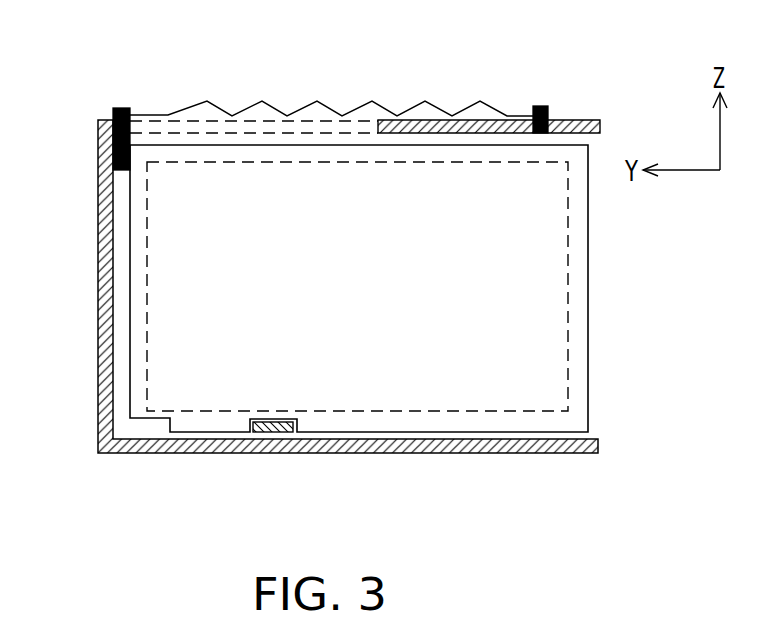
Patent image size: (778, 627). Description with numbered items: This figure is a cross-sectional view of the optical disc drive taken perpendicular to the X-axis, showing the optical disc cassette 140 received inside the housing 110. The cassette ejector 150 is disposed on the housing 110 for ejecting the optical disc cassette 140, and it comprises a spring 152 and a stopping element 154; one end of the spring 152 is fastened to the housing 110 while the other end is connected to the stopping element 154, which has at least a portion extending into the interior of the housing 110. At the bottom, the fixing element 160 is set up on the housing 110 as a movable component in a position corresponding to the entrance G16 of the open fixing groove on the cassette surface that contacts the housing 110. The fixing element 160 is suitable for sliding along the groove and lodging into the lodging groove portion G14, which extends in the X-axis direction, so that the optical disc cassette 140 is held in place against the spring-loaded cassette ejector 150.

The housing 110 is at (112, 283).
The optical disc cassette 140 is at (577, 298).
The cassette ejector 150 is at (232, 46).
The spring 152 is at (222, 110).
The stopping element 154 is at (115, 107).
The fixing element 160 is at (287, 433).
The lodging groove portion G14 is at (252, 432).
The entrance G16 is at (143, 426).